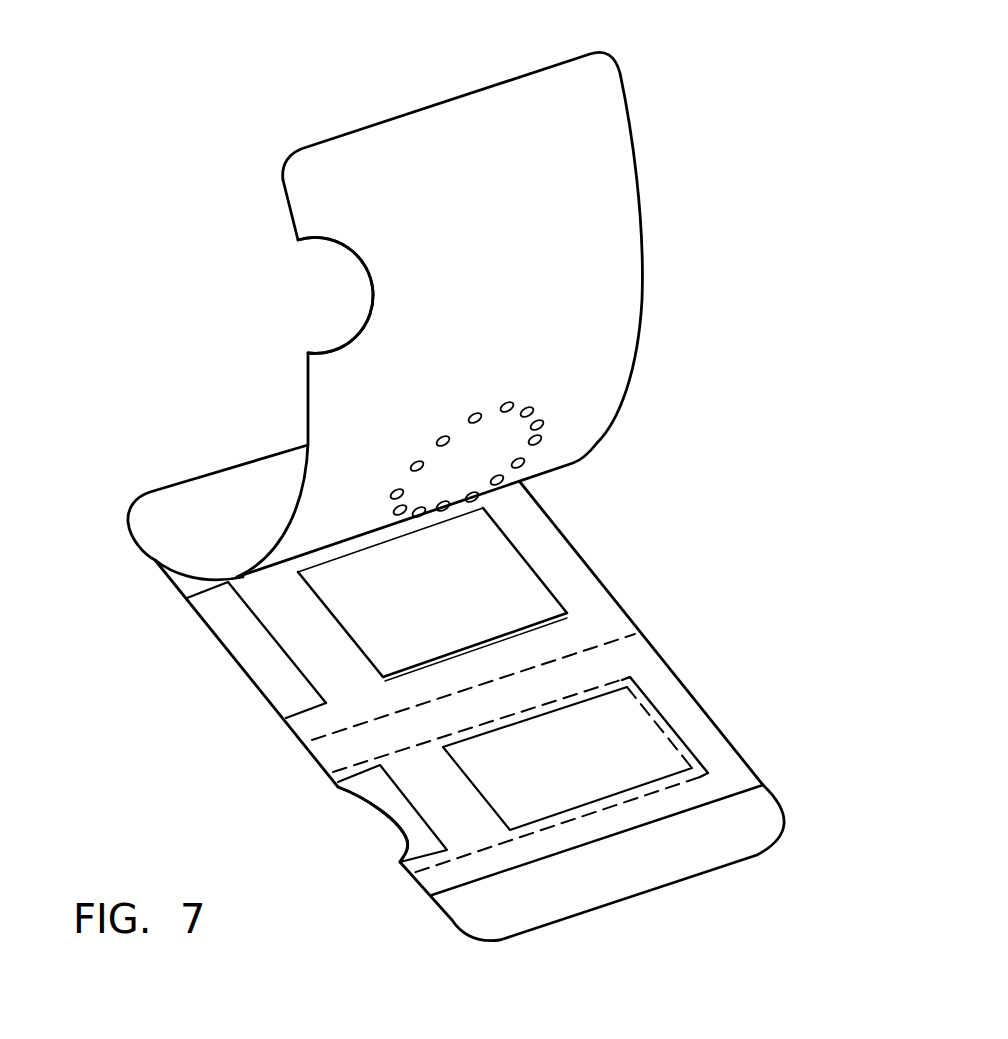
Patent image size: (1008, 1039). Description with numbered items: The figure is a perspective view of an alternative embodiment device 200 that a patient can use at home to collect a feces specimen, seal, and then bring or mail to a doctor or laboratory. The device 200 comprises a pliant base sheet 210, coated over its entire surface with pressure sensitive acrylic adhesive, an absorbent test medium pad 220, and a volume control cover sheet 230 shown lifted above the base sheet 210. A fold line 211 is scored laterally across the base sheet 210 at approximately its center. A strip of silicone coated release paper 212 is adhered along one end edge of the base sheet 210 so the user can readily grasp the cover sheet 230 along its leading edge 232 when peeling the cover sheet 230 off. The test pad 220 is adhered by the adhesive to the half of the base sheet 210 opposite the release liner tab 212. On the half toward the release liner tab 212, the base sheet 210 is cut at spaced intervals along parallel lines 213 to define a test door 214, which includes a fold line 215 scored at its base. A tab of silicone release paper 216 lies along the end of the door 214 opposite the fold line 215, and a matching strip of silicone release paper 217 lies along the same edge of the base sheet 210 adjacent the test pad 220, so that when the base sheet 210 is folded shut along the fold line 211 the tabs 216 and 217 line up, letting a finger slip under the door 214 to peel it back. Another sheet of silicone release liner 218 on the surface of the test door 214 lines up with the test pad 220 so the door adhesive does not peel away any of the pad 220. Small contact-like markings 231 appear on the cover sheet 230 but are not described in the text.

The device 200 is at (215, 702).
The base sheet 210 is at (724, 738).
The fold line 211 is at (580, 652).
The strip of silicone coated release paper 212 is at (684, 863).
The parallel lines 213 is at (367, 762).
The test door 214 is at (423, 780).
The fold line 215 is at (652, 700).
The tab of silicone release paper 216 is at (405, 853).
The strip of silicone release paper 217 is at (258, 667).
The sheet of silicone release liner 218 is at (599, 763).
The absorbent test medium pad 220 is at (485, 569).
The volume control cover sheet 230 is at (552, 160).
The contacts 231 is at (417, 462).
The leading edge 232 is at (358, 130).